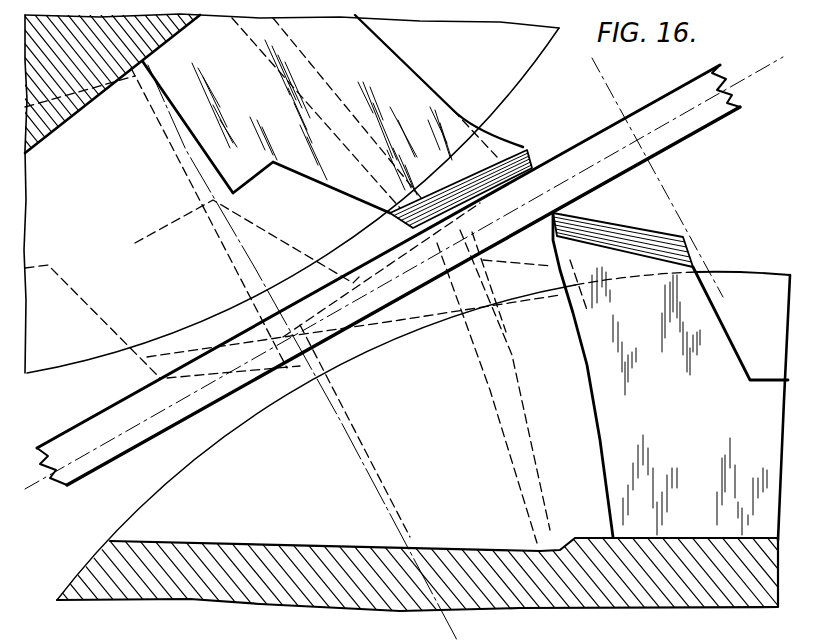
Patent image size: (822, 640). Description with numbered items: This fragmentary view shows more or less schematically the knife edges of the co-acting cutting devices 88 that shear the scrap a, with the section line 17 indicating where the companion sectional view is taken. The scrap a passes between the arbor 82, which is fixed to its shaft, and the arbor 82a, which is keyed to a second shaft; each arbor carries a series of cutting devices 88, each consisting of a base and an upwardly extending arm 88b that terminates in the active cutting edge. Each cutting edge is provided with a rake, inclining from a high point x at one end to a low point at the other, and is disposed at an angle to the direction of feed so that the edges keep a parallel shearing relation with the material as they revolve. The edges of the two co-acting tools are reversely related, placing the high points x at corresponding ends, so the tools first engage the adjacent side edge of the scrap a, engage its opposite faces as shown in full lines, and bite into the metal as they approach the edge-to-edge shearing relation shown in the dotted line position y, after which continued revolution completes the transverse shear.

The arbor 82 is at (65, 118).
The arbor 82a is at (665, 637).
The cutting device 88 is at (455, 276).
The arm 88b is at (779, 322).
The section line 17 is at (601, 69).
The scrap a is at (697, 128).
The high point of cutting edge x is at (522, 155).
The dotted line position y is at (510, 357).